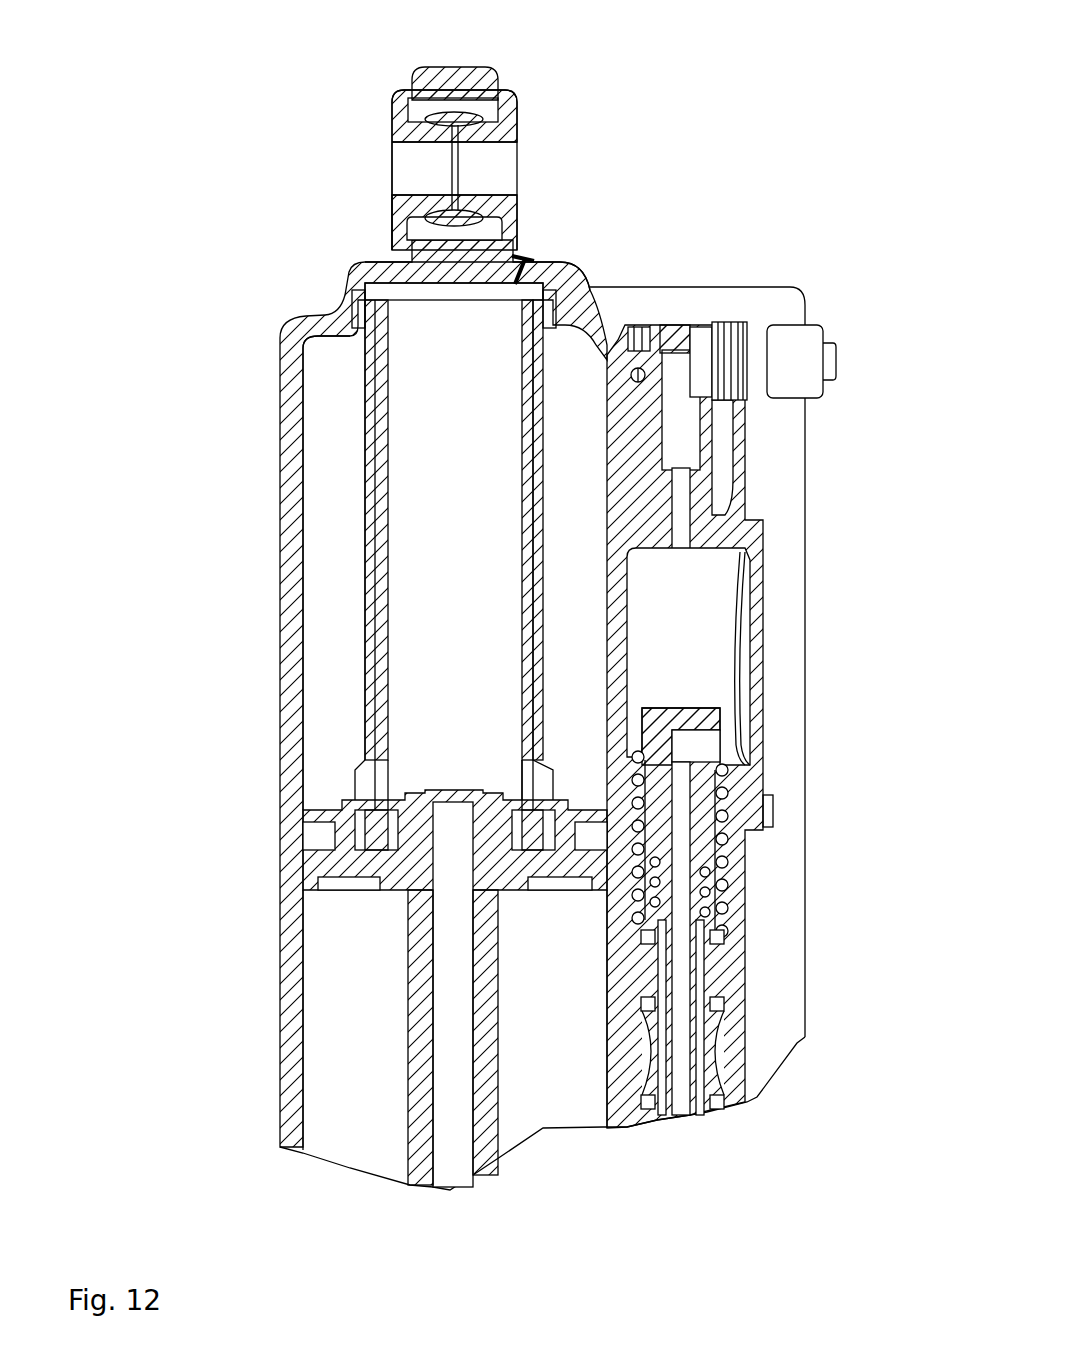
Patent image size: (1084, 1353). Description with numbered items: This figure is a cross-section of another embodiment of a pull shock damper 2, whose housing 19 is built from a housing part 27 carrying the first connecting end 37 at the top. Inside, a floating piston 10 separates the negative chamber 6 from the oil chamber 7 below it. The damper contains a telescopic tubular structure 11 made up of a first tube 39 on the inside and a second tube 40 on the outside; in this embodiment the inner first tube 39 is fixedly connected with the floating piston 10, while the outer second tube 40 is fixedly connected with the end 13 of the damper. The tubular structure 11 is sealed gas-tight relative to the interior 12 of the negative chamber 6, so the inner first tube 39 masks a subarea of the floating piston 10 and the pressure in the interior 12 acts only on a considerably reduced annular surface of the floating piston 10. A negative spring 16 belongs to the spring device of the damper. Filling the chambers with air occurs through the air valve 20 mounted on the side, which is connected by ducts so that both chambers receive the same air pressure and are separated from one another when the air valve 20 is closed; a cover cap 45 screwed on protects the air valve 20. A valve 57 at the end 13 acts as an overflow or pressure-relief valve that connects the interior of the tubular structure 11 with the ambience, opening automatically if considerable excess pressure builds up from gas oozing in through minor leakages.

The pull shock damper 2 is at (570, 58).
The negative chamber 6 is at (323, 375).
The oil chamber 7 is at (318, 990).
The floating piston 10 is at (308, 865).
The tubular structure 11 is at (363, 437).
The interior 12 is at (320, 492).
The end 13 is at (360, 292).
The negative spring 16 is at (325, 615).
The housing 19 is at (278, 563).
The air valve 20 is at (846, 322).
The housing part 27 is at (285, 1055).
The first connecting end 37 is at (385, 70).
The first tube 39 is at (522, 385).
The second tube 40 is at (533, 725).
The cover cap 45 is at (818, 307).
The valve 57 is at (528, 262).